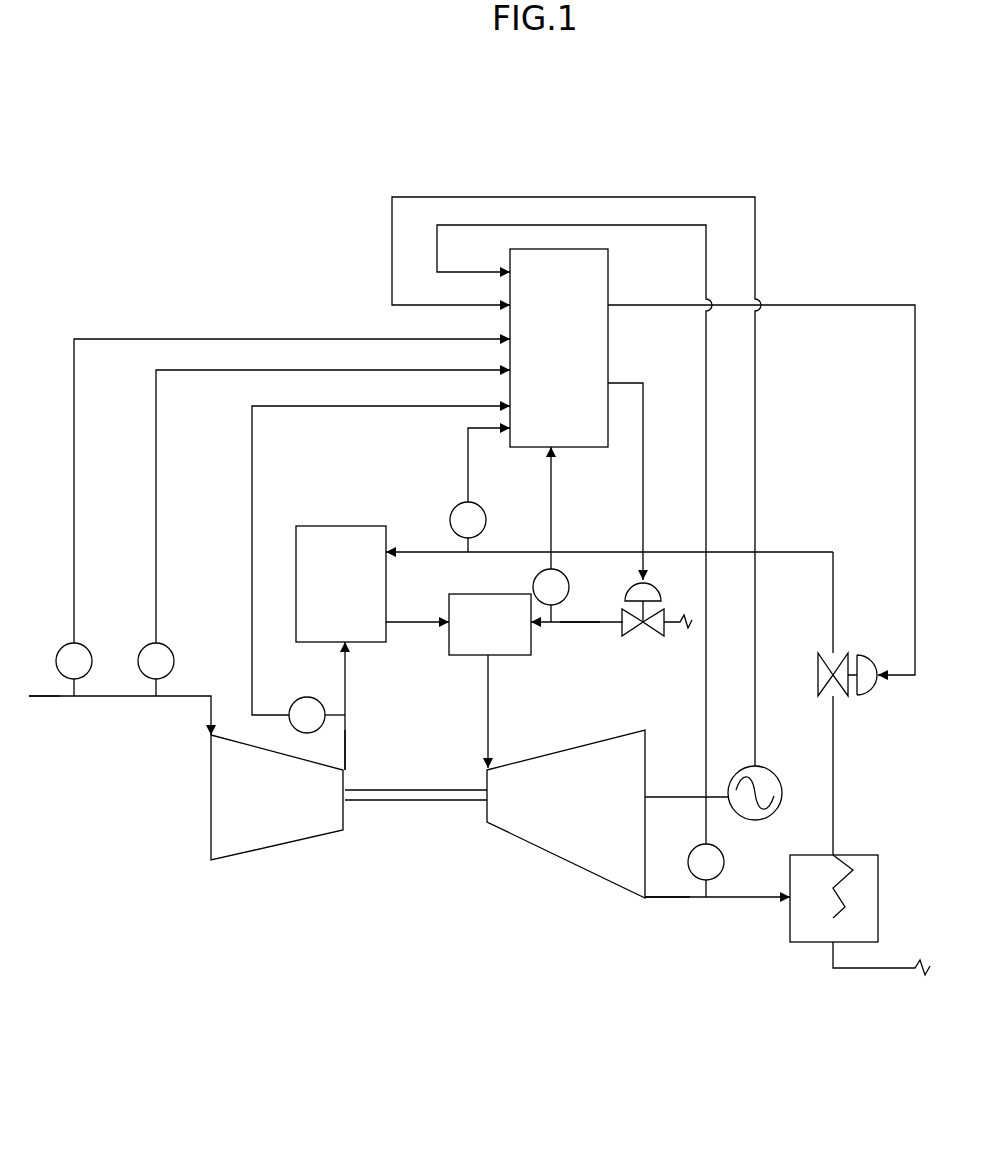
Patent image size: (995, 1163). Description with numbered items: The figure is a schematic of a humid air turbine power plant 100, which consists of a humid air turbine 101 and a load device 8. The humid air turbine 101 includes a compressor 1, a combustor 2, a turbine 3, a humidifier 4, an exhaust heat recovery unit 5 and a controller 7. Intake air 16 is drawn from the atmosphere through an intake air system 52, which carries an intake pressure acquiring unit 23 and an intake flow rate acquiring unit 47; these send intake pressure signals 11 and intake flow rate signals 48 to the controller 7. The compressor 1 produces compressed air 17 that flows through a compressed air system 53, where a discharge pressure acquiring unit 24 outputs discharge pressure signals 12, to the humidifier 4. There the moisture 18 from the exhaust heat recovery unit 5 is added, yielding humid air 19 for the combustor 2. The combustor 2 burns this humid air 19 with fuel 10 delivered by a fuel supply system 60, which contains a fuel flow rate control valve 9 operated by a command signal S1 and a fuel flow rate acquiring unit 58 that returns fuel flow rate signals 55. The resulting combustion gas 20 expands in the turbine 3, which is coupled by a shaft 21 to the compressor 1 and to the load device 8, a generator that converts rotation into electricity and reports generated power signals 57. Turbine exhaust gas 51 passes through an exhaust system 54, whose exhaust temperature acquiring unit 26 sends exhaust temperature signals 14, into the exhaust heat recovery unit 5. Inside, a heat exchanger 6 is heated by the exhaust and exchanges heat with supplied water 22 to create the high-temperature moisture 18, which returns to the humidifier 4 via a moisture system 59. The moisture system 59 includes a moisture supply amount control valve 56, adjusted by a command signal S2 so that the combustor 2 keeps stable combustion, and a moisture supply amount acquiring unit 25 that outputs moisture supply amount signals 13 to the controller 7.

The compressor 1 is at (280, 845).
The combustor 2 is at (452, 596).
The turbine 3 is at (553, 852).
The humidifier 4 is at (328, 526).
The exhaust heat recovery unit 5 is at (815, 942).
The heat exchanger 6 is at (848, 866).
The controller 7 is at (608, 284).
The load device 8 is at (772, 768).
The fuel flow rate control valve 9 is at (638, 632).
The fuel 10 is at (584, 628).
The intake pressure signals 11 is at (154, 432).
The discharge pressure signals 12 is at (250, 466).
The moisture supply amount signals 13 is at (472, 459).
The exhaust temperature signals 14 is at (505, 226).
The intake air 16 is at (128, 698).
The compressed air 17 is at (350, 672).
The moisture 18 is at (770, 552).
The humid air 19 is at (412, 624).
The combustion gas 20 is at (486, 740).
The shaft 21 is at (412, 802).
The supplied water 22 is at (884, 969).
The intake pressure acquiring unit 23 is at (168, 649).
The discharge pressure acquiring unit 24 is at (296, 701).
The moisture supply amount acquiring unit 25 is at (458, 505).
The exhaust temperature acquiring unit 26 is at (724, 862).
The intake flow rate acquiring unit 47 is at (60, 648).
The intake flow rate signals 48 is at (70, 448).
The turbine exhaust gas 51 is at (740, 898).
The intake air system 52 is at (76, 704).
The compressed air system 53 is at (352, 733).
The exhaust system 54 is at (678, 898).
The fuel flow rate signals 55 is at (554, 495).
The moisture supply amount control valve 56 is at (870, 690).
The generated power signals 57 is at (675, 197).
The fuel flow rate acquiring unit 58 is at (534, 584).
The moisture system 59 is at (833, 550).
The fuel supply system 60 is at (584, 633).
The humid air turbine power plant 100 is at (452, 1013).
The humid air turbine 101 is at (338, 912).
The command signal S1 is at (648, 395).
The command signal S2 is at (880, 303).